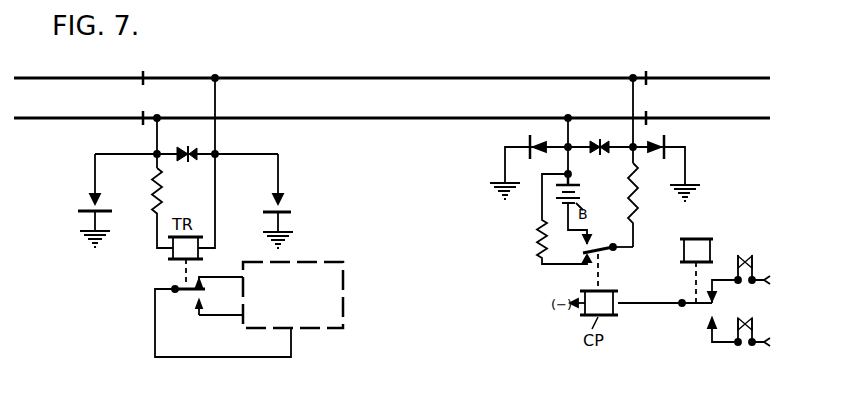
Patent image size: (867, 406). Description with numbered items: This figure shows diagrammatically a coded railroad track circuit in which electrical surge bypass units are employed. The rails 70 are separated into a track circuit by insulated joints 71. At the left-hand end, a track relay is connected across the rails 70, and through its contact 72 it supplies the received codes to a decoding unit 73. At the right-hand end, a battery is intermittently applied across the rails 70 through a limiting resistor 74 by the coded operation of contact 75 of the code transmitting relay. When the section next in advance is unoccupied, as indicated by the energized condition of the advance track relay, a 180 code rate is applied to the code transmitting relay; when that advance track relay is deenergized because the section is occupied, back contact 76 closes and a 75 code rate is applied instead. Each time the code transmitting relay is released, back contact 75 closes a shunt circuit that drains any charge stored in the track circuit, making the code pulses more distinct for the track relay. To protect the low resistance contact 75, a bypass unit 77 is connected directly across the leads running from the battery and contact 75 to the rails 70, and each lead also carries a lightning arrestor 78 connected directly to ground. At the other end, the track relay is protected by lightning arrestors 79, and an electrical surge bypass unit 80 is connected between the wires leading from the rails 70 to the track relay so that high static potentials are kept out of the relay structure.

The rails 70 is at (348, 78).
The insulated joints 71 is at (143, 114).
The contact 72 is at (192, 280).
The decoding unit 73 is at (345, 302).
The limiting resistor 74 is at (619, 205).
The contact 75 is at (614, 250).
The back contact 76 is at (696, 306).
The bypass unit 77 is at (604, 153).
The lightning arrestors 78 is at (528, 141).
The lightning arrestors 79 is at (89, 201).
The electrical surge bypass unit 80 is at (190, 160).
The 180 code rate 180 is at (747, 249).